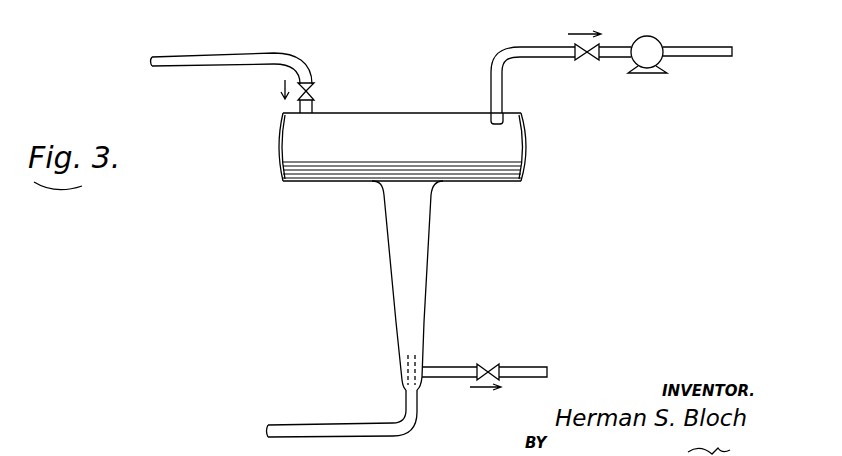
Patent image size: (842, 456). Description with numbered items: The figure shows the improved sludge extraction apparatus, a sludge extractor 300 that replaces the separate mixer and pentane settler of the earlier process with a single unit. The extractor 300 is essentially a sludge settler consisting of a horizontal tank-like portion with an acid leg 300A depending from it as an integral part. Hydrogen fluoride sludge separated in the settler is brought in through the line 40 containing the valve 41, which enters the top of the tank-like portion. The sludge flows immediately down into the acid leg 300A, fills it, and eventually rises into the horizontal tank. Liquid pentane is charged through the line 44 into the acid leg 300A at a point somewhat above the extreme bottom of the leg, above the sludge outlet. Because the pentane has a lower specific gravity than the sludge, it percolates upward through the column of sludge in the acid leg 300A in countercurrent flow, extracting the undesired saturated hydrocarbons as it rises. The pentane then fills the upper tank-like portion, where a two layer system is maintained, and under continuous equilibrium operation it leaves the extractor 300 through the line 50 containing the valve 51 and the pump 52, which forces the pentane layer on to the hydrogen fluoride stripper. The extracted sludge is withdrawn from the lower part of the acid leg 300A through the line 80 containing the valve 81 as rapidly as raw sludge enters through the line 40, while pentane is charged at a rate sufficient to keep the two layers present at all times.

The line 40 is at (206, 66).
The valve 41 is at (315, 92).
The sludge extractor 300 is at (440, 97).
The acid leg 300A is at (431, 262).
The line 50 is at (511, 46).
The valve 51 is at (590, 62).
The pump 52 is at (658, 39).
The line 80 is at (445, 366).
The valve 81 is at (492, 363).
The line 44 is at (318, 411).